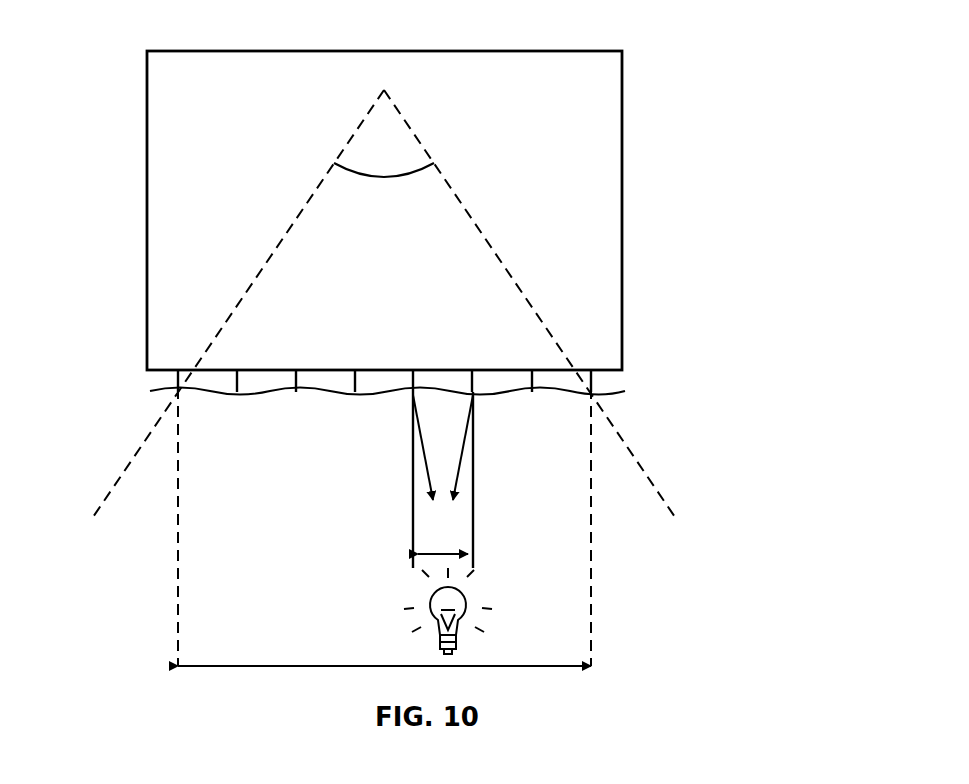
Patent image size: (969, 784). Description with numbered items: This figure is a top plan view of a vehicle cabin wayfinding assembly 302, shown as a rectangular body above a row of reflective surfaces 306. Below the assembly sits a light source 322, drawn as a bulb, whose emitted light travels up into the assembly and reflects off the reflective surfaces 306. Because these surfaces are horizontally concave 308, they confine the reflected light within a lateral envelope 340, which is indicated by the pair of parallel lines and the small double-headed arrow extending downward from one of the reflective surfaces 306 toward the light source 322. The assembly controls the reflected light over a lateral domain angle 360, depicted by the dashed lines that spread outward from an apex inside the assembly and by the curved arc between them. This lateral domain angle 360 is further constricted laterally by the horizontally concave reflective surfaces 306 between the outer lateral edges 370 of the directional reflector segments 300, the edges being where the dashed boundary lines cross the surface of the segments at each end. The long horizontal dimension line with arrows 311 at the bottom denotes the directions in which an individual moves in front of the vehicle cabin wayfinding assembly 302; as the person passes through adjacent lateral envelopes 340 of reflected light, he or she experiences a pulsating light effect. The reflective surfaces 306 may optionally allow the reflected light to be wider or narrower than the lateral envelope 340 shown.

The directional reflector segments 300 is at (592, 381).
The vehicle cabin wayfinding assembly 302 is at (628, 127).
The reflective surfaces 306 is at (203, 393).
The horizontally concave 308 is at (462, 391).
The arrows 311 is at (363, 664).
The light source 322 is at (468, 612).
The lateral envelope 340 is at (473, 533).
The lateral domain angle 360 is at (403, 151).
The outer lateral edges 370 is at (178, 392).